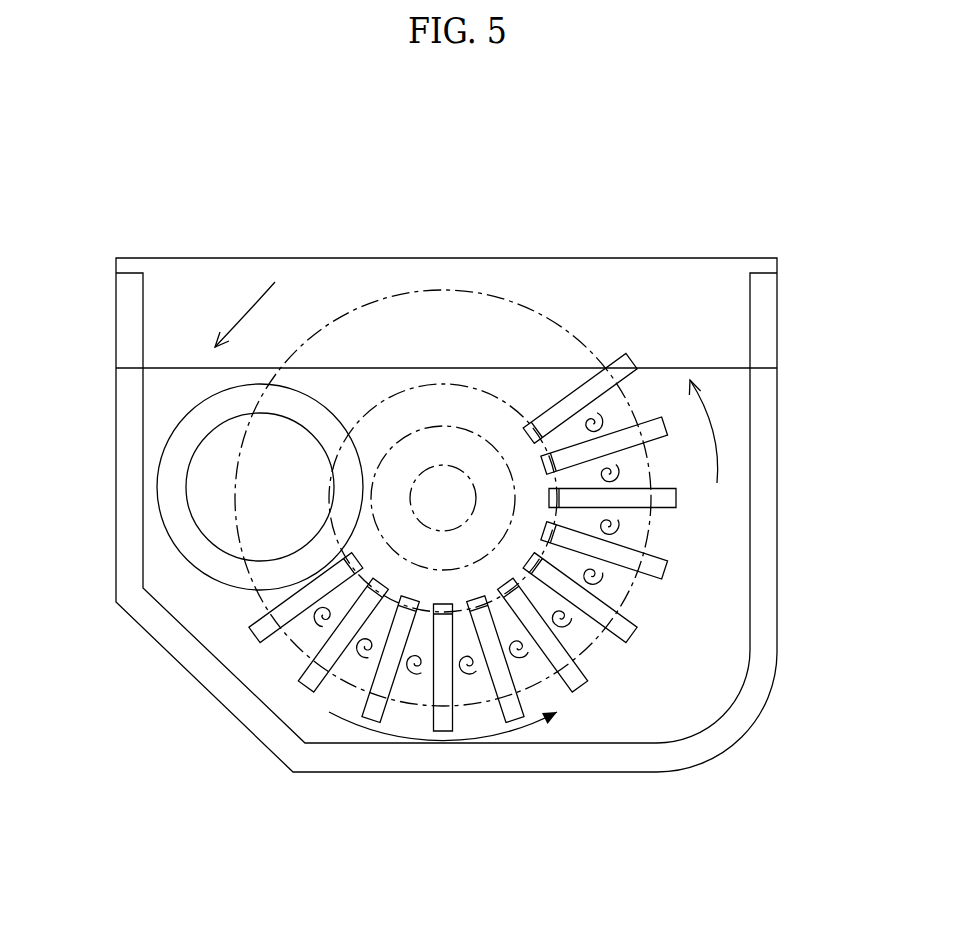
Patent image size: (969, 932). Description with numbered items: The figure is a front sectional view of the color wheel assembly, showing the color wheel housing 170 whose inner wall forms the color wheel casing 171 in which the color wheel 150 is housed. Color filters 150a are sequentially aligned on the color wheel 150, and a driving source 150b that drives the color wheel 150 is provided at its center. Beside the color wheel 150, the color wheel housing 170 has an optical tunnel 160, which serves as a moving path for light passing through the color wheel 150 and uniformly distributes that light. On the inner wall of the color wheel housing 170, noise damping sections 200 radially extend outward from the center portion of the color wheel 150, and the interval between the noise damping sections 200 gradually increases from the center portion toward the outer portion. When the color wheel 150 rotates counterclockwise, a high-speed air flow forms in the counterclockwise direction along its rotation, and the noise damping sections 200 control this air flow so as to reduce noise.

The color wheel 150 is at (540, 452).
The color filters 150a is at (567, 343).
The driving source 150b is at (430, 482).
The optical tunnel 160 is at (180, 423).
The color wheel housing 170 is at (787, 317).
The color wheel casing 171 is at (202, 292).
The noise damping section 200 is at (658, 564).